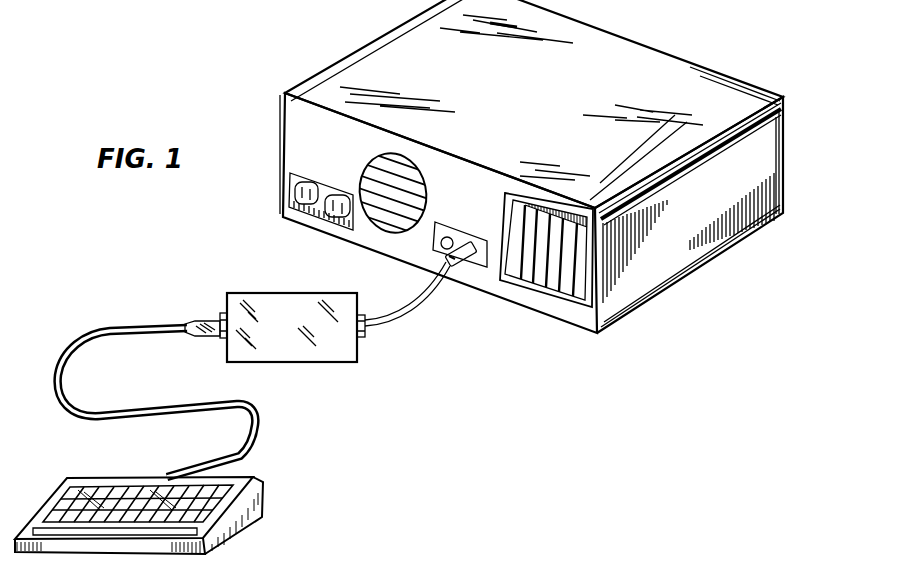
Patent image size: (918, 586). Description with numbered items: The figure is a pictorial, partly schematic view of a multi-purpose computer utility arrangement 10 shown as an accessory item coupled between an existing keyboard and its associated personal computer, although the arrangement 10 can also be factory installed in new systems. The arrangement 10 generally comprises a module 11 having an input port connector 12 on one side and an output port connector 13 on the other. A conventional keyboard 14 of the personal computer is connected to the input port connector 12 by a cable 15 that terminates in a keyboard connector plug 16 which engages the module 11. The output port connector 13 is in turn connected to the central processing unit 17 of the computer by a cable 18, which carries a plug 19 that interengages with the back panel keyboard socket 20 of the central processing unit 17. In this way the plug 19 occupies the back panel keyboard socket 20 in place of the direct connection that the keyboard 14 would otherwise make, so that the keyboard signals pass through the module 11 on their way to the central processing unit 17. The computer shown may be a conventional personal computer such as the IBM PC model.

The multi-purpose computer utility arrangement 10 is at (238, 270).
The module 11 is at (322, 368).
The input port connector 12 is at (222, 312).
The output port connector 13 is at (362, 340).
The keyboard 14 is at (260, 469).
The cable 15 is at (236, 397).
The keyboard connector plug 16 is at (188, 331).
The central processing unit 17 is at (371, 68).
The cable 18 is at (413, 296).
The plug 19 is at (468, 265).
The back panel keyboard socket 20 is at (488, 245).